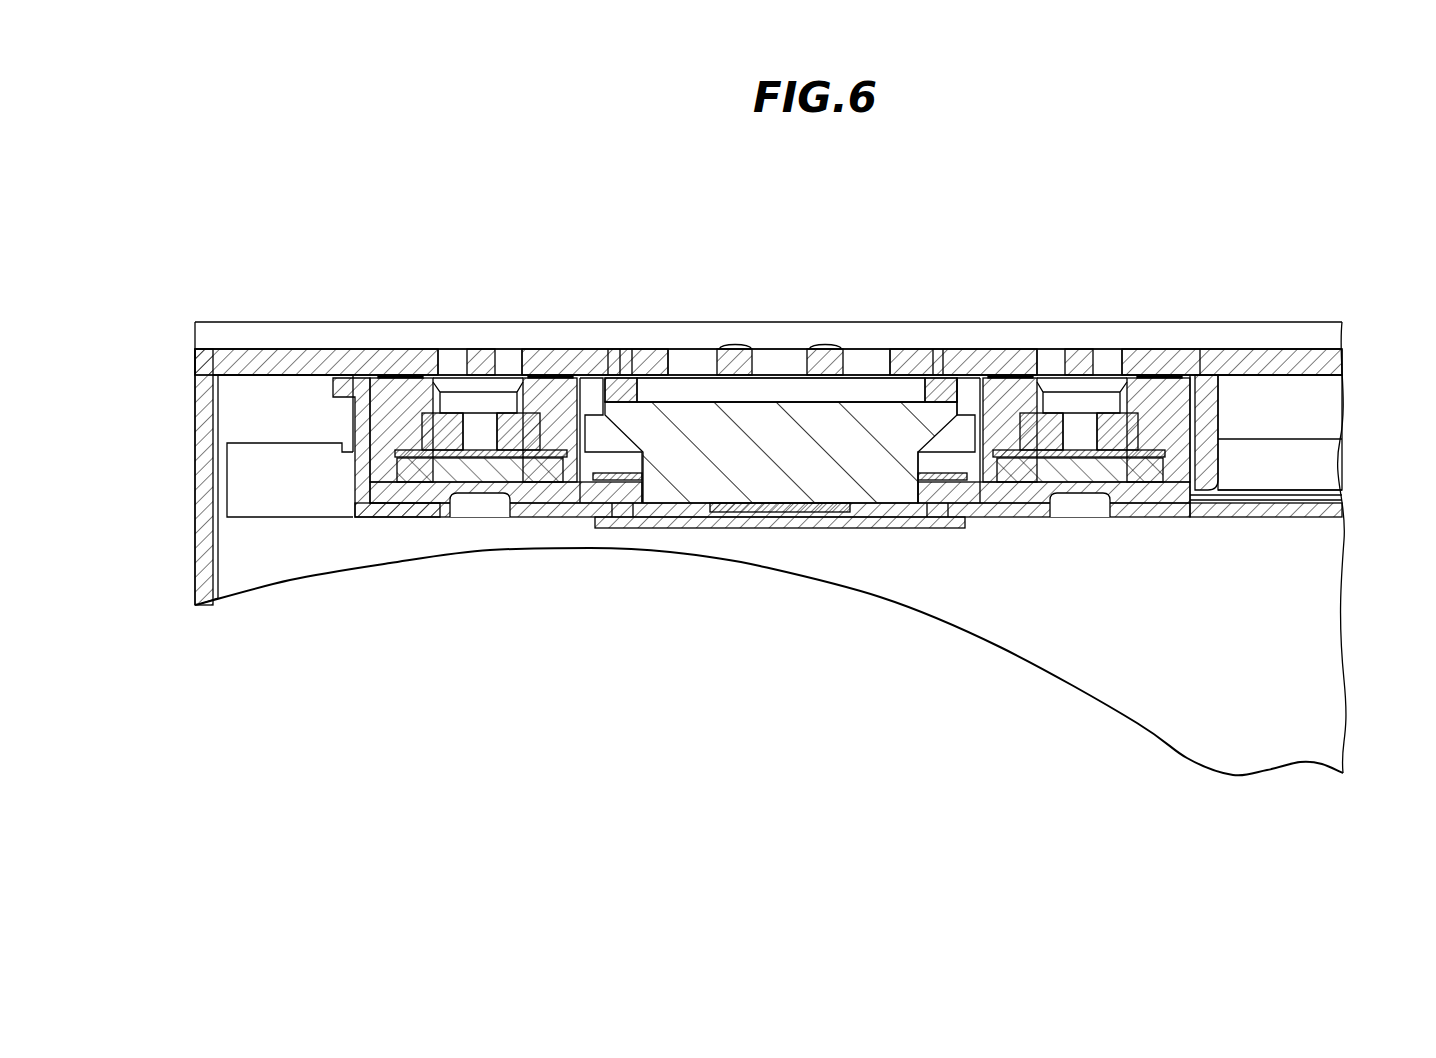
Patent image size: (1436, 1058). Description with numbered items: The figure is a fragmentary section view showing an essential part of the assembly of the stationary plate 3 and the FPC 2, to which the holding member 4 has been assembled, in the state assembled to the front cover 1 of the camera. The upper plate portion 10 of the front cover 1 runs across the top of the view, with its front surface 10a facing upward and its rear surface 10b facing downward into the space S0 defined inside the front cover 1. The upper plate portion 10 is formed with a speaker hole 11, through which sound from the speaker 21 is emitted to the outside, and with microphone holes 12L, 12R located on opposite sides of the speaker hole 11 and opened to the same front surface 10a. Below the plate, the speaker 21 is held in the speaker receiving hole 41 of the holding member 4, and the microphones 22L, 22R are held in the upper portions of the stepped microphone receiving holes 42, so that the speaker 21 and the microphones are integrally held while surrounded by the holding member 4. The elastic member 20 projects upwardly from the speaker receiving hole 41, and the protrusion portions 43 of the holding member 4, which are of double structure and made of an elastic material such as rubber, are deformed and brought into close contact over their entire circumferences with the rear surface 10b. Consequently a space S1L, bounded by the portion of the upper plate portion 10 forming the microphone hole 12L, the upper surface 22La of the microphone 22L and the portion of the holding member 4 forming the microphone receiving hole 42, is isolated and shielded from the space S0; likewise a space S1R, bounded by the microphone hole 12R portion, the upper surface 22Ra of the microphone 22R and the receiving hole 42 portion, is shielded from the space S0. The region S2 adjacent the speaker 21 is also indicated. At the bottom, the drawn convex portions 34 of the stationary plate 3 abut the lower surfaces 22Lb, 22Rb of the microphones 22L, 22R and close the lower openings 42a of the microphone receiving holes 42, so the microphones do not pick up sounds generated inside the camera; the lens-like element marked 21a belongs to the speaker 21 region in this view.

The front cover 1 is at (1352, 362).
The FPC 2 is at (1352, 494).
The stationary plate 3 is at (1352, 512).
The holding member 4 is at (1175, 375).
The upper plate portion 10 is at (262, 363).
The front surface 10a is at (315, 350).
The rear surface 10b is at (305, 380).
The speaker hole 11 is at (763, 362).
The microphone hole 12L is at (517, 363).
The microphone hole 12R is at (1117, 362).
The elastic member 20 is at (623, 380).
The speaker 21 is at (780, 490).
The lens flange 21a is at (785, 378).
The microphone 22L is at (433, 380).
The upper surface 22La is at (537, 380).
The lower surface 22Lb is at (490, 495).
The microphone 22R is at (1150, 400).
The upper surface 22Ra is at (1138, 380).
The lower surface 22Rb is at (1120, 470).
The drawn convex portion 34 is at (481, 457).
The speaker receiving hole 41 is at (627, 482).
The microphone receiving hole 42 is at (410, 500).
The lower opening 42a is at (462, 500).
The protrusion portion 43 is at (390, 377).
The space S0 is at (1288, 385).
The space S1L is at (480, 403).
The space S1R is at (1080, 403).
The space S2 is at (745, 390).